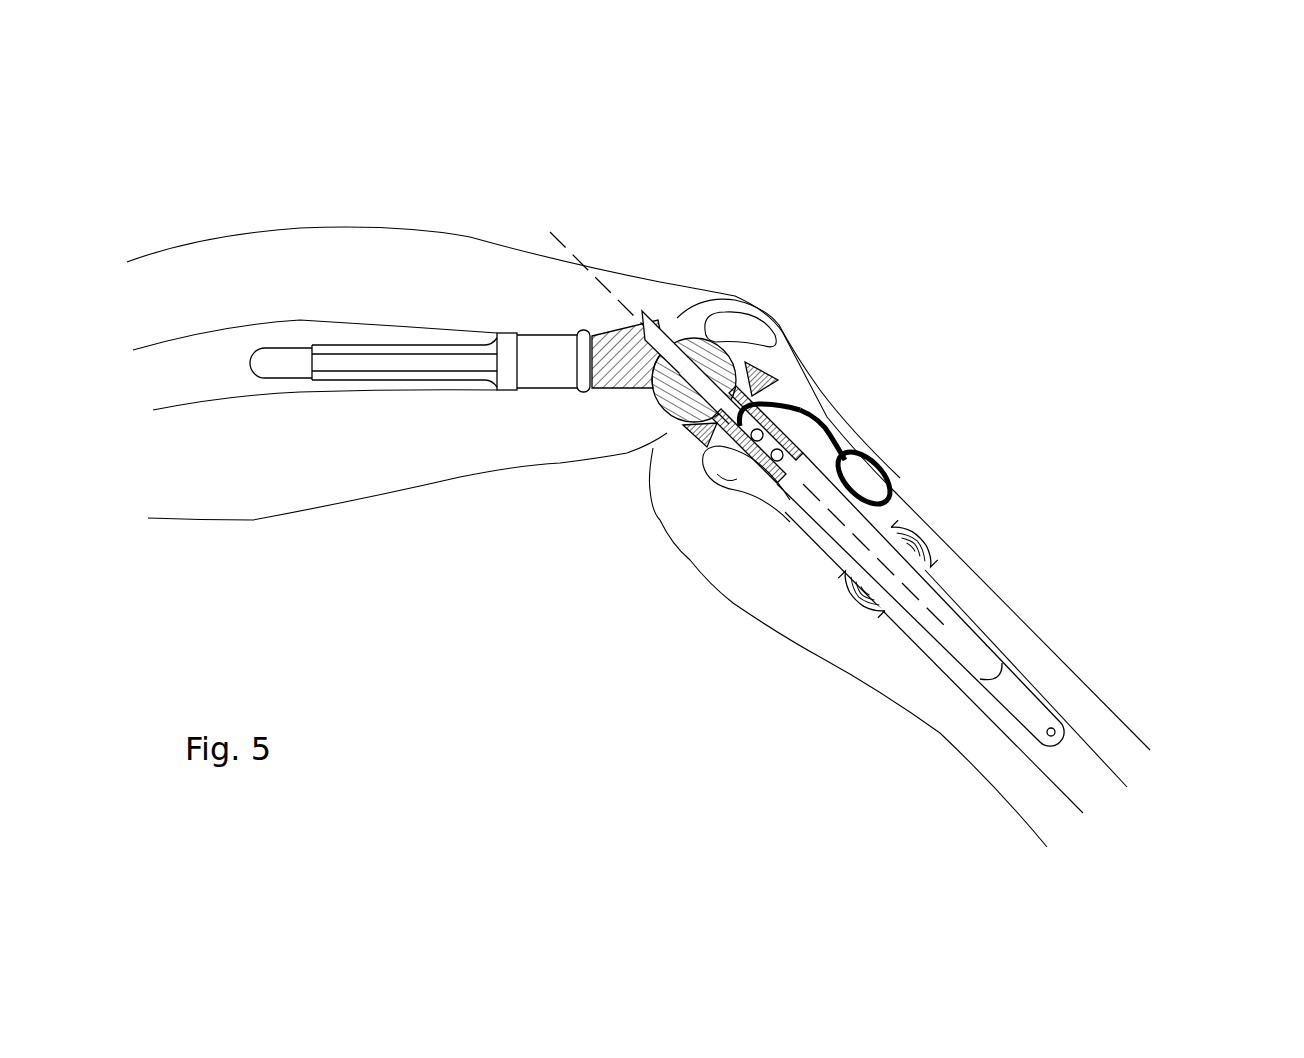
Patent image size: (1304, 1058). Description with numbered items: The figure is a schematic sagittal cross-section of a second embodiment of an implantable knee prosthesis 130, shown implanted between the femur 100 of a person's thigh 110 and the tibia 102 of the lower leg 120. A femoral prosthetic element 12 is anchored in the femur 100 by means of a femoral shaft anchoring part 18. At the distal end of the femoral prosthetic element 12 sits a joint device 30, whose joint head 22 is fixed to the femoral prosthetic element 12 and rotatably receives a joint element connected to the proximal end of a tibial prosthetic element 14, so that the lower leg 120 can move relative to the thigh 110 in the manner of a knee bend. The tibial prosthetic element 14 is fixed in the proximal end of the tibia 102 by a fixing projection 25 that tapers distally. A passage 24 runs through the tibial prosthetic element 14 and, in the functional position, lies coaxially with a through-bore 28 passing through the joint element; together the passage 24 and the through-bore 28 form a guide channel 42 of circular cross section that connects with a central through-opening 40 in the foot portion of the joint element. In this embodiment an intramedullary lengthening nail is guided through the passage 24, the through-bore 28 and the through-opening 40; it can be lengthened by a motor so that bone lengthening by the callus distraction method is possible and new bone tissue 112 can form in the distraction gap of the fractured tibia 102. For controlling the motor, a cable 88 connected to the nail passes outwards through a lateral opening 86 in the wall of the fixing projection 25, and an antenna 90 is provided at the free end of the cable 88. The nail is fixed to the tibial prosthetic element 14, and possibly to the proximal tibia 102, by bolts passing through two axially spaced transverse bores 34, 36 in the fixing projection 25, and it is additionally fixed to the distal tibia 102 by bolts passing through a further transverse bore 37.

The femur 100 is at (195, 350).
The thigh 110 is at (258, 230).
The femoral prosthetic element 12 is at (522, 321).
The prosthesis 130 is at (589, 186).
The passage 24 is at (668, 330).
The joint head 22 is at (697, 315).
The joint device 30 is at (732, 337).
The tibial prosthetic element 14 is at (778, 383).
The lateral opening 86 is at (770, 400).
The fixing projection 25 is at (782, 423).
The cable 88 is at (833, 438).
The antenna 90 is at (865, 477).
The new bone tissue 112 is at (917, 555).
The lower leg 120 is at (1070, 668).
The tibia 102 is at (1083, 763).
The through-bore 28 is at (677, 372).
The through-opening 40 is at (708, 387).
The guide channel 42 is at (711, 436).
The transverse bore 34 is at (756, 441).
The transverse bore 36 is at (777, 461).
The transverse bore 37 is at (1047, 733).
The femoral shaft anchoring part 18 is at (368, 362).